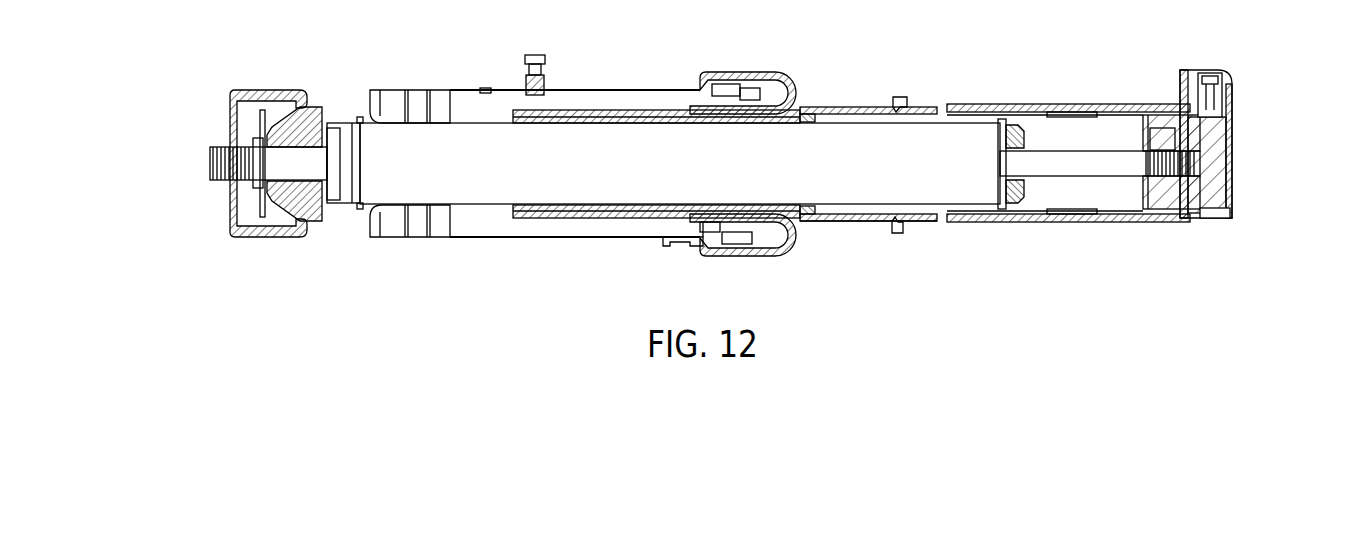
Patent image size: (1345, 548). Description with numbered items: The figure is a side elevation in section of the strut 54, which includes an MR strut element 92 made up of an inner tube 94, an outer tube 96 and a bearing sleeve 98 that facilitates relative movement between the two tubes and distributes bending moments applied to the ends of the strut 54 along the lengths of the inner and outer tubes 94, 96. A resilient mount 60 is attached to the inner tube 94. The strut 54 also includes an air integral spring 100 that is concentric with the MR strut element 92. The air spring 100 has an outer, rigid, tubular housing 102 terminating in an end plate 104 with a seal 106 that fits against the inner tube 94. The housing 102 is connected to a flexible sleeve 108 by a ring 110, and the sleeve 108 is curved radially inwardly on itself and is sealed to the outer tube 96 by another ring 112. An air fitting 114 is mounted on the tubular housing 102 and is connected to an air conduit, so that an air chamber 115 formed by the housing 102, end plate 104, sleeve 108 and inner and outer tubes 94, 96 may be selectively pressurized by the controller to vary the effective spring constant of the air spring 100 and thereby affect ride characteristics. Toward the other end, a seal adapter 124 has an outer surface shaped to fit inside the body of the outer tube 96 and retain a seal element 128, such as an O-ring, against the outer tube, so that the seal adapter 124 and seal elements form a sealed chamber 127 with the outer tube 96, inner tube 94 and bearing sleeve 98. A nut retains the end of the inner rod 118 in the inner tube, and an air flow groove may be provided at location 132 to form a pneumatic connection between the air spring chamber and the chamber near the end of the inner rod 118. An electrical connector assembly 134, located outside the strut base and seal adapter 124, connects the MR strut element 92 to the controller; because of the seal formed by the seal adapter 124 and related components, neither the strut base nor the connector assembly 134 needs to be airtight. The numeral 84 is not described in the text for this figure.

The strut 54 is at (816, 94).
The resilient mount 60 is at (269, 90).
The outer housing tube 84 is at (985, 104).
The MR strut element 92 is at (856, 138).
The inner tube 94 is at (925, 125).
The outer tube 96 is at (848, 222).
The bearing sleeve 98 is at (613, 205).
The air integral spring 100 is at (646, 86).
The tubular housing 102 is at (446, 90).
The end plate 104 is at (323, 108).
The seal 106 is at (359, 117).
The flexible sleeve 108 is at (742, 257).
The ring 110 is at (688, 247).
The ring 112 is at (709, 233).
The air fitting 114 is at (530, 55).
The air chamber 115 is at (486, 92).
The inner rod 118 is at (1060, 170).
The seal adapter 124 is at (1145, 135).
The sealed chamber 127 is at (1050, 114).
The seal element 128 is at (1161, 115).
The location 132 is at (613, 110).
The electrical connector assembly 134 is at (1242, 139).